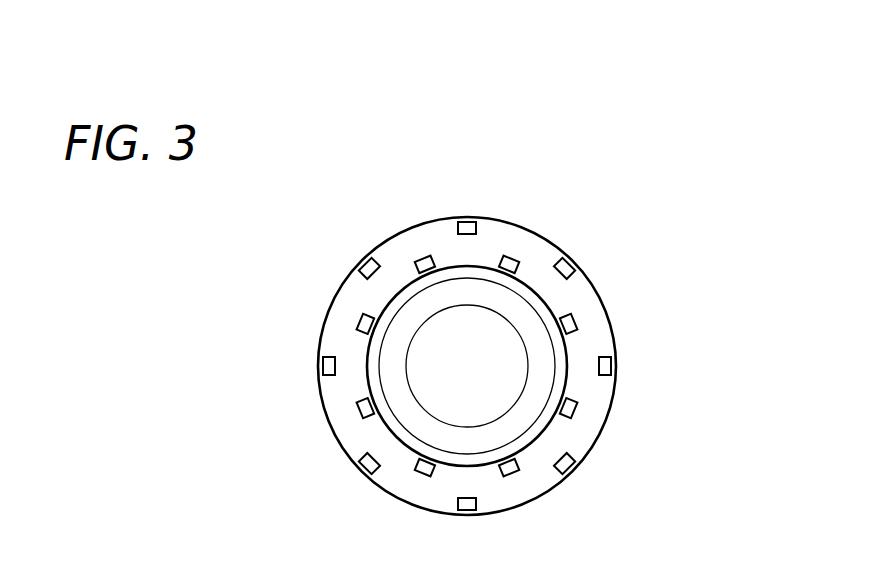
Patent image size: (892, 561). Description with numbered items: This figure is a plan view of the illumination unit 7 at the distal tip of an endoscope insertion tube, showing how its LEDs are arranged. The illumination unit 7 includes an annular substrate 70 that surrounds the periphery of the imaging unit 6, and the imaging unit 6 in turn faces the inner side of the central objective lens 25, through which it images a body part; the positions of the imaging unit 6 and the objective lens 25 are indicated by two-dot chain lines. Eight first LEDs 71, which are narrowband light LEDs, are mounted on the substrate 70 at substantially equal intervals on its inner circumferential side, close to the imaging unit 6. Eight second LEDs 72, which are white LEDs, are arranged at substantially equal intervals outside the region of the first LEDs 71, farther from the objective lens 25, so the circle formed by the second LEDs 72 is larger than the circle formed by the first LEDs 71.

The illumination unit 7 is at (362, 218).
The annular substrate 70 is at (532, 228).
The first LEDs 71 is at (355, 322).
The second LEDs 72 is at (320, 366).
The objective lens 25 is at (538, 318).
The imaging unit 6 is at (528, 378).